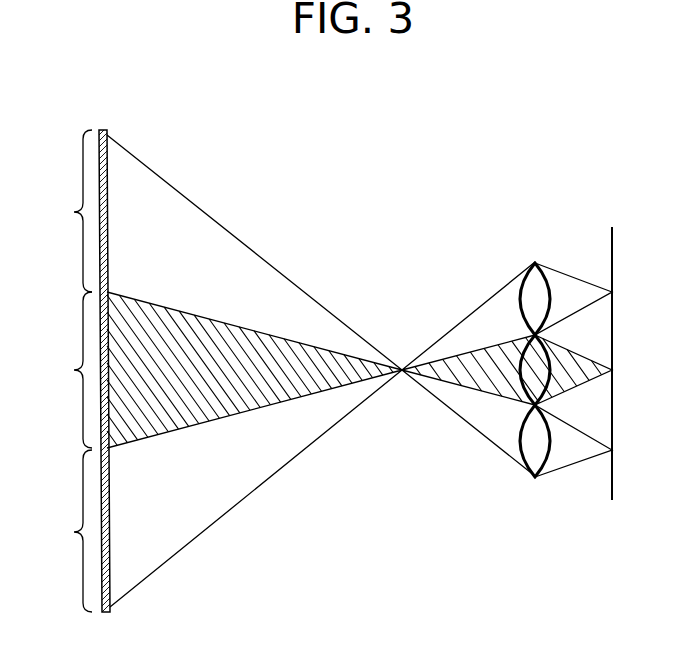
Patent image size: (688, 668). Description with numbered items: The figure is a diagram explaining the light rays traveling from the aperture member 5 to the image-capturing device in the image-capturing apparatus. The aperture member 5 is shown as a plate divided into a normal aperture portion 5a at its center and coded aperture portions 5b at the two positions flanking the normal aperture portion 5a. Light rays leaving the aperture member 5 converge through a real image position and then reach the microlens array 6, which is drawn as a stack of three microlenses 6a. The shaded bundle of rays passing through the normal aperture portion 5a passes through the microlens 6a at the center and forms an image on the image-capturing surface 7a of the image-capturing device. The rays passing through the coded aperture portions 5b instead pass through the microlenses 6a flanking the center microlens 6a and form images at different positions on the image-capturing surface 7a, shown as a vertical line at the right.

The aperture member 5 is at (113, 120).
The normal aperture portion 5a is at (66, 370).
The coded aperture portions 5b is at (66, 371).
The microlens array 6 is at (526, 325).
The microlens 6a is at (554, 272).
The image-capturing surface 7a is at (610, 243).